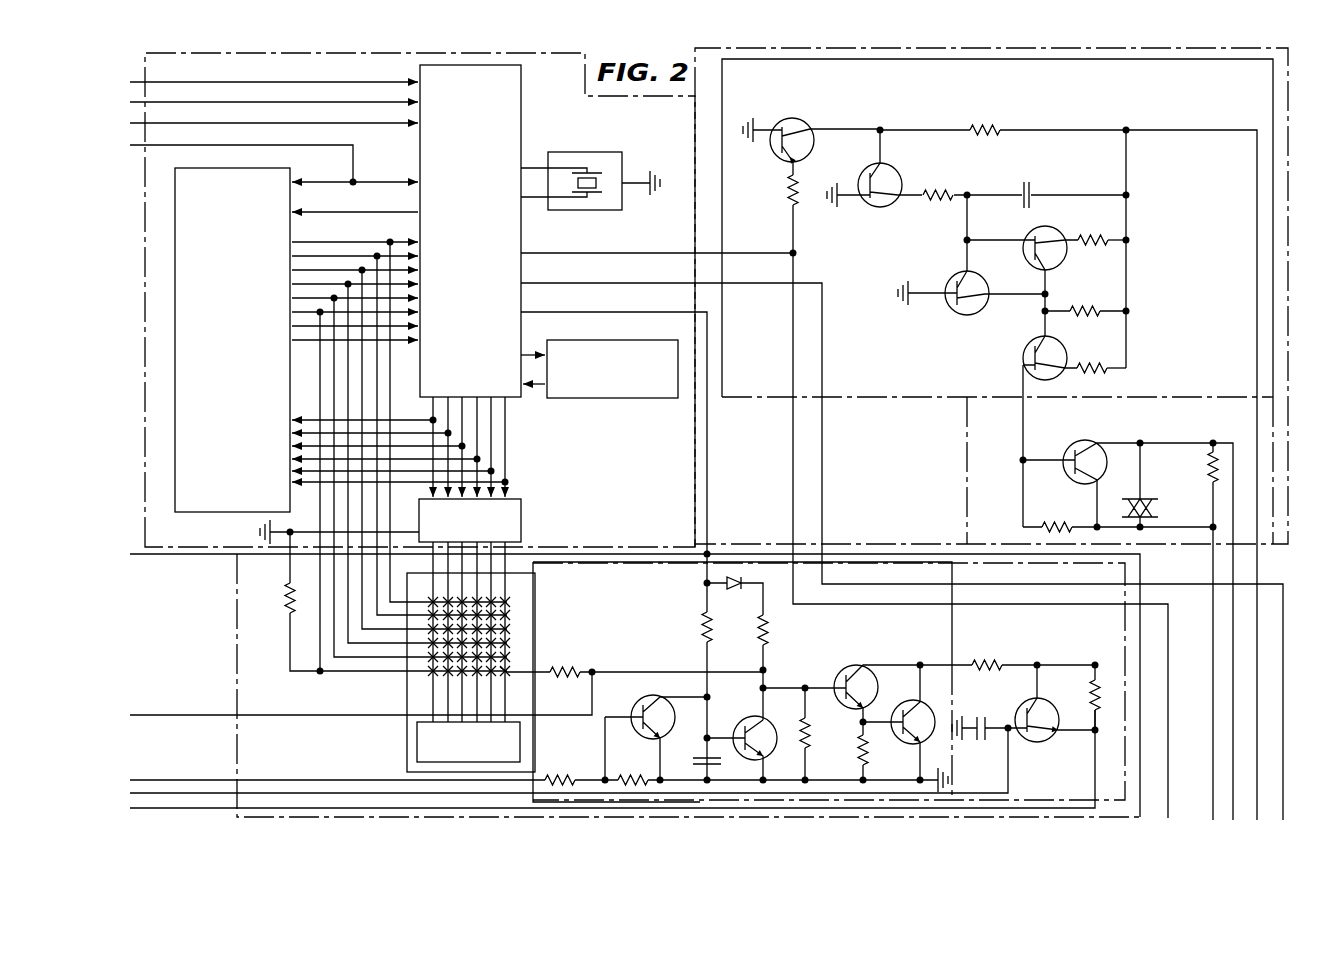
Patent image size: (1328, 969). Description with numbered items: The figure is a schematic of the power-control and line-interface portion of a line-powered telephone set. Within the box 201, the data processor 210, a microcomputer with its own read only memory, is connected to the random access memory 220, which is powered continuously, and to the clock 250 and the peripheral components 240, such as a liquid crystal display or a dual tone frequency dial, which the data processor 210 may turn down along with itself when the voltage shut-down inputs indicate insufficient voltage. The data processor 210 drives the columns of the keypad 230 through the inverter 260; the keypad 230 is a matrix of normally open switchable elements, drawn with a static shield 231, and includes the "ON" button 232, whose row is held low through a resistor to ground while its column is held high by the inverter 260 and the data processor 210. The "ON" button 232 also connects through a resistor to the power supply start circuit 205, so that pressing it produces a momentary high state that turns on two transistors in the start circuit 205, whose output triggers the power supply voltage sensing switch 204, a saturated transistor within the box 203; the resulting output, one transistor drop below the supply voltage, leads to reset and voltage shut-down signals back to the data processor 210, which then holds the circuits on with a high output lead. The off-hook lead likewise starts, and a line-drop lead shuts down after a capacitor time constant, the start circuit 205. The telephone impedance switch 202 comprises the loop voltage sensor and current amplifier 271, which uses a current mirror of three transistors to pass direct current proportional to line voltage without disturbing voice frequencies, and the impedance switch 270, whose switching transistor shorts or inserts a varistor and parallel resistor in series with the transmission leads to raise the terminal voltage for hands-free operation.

The data processor box 201 is at (221, 548).
The telephone impedance switch 202 is at (1288, 102).
The power supply voltage sensing switch box 203 is at (237, 650).
The power supply voltage sensing switch 204 is at (1125, 565).
The power supply start circuit 205 is at (680, 563).
The data processor 210 is at (521, 67).
The random access memory 220 is at (290, 168).
The keypad 230 is at (407, 682).
The static shield 231 is at (521, 742).
The "ON" button 232 is at (507, 672).
The peripheral components 240 is at (615, 399).
The clock 250 is at (596, 152).
The inverter 260 is at (522, 520).
The impedance switch 270 is at (967, 430).
The loop voltage sensor and current amplifier 271 is at (888, 397).